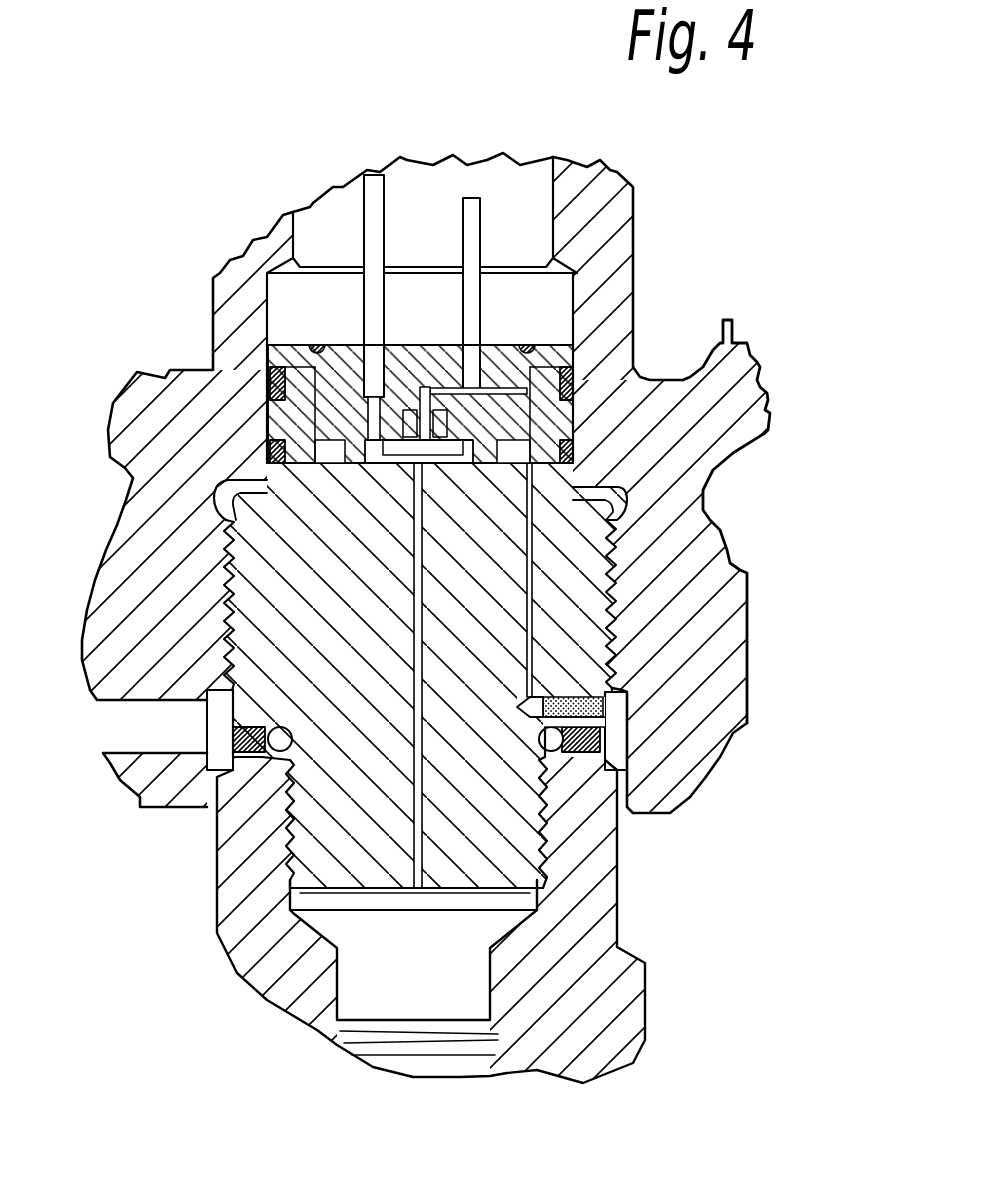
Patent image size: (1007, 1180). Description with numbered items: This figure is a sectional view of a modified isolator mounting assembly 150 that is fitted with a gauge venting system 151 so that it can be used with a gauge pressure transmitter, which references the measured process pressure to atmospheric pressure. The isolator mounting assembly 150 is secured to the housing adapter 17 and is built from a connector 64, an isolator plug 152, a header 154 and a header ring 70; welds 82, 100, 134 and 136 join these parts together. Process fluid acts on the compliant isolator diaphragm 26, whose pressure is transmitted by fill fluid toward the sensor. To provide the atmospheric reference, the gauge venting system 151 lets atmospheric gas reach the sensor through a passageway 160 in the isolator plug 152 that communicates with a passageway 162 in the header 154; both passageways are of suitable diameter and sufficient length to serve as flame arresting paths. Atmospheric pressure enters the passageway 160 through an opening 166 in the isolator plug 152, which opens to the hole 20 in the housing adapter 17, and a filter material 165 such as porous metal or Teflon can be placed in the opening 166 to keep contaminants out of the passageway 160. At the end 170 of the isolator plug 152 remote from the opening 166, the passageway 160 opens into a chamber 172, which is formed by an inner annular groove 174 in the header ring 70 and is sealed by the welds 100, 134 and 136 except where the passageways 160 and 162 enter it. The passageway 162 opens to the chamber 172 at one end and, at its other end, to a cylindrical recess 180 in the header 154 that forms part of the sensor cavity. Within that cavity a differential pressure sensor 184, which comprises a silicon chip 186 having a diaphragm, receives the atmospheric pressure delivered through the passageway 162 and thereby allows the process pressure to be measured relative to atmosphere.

The housing adapter 17 is at (727, 460).
The hole 20 is at (620, 813).
The isolator diaphragm 26 is at (300, 915).
The connector 64 is at (645, 973).
The header ring 70 is at (441, 330).
The weld 82 is at (203, 732).
The weld 100 is at (258, 460).
The weld 134 is at (320, 340).
The weld 136 is at (133, 478).
The isolator mounting assembly 150 is at (513, 773).
The gauge venting system 151 is at (622, 707).
The isolator plug 152 is at (580, 625).
The header 154 is at (520, 343).
The passageway 160 is at (560, 593).
The passageway 162 is at (467, 395).
The filter material 165 is at (585, 715).
The opening 166 is at (585, 688).
The end 170 is at (562, 430).
The chamber 172 is at (597, 497).
The inner annular groove 174 is at (573, 417).
The cylindrical recess 180 is at (285, 437).
The differential pressure sensor 184 is at (400, 427).
The silicon chip 186 is at (408, 425).